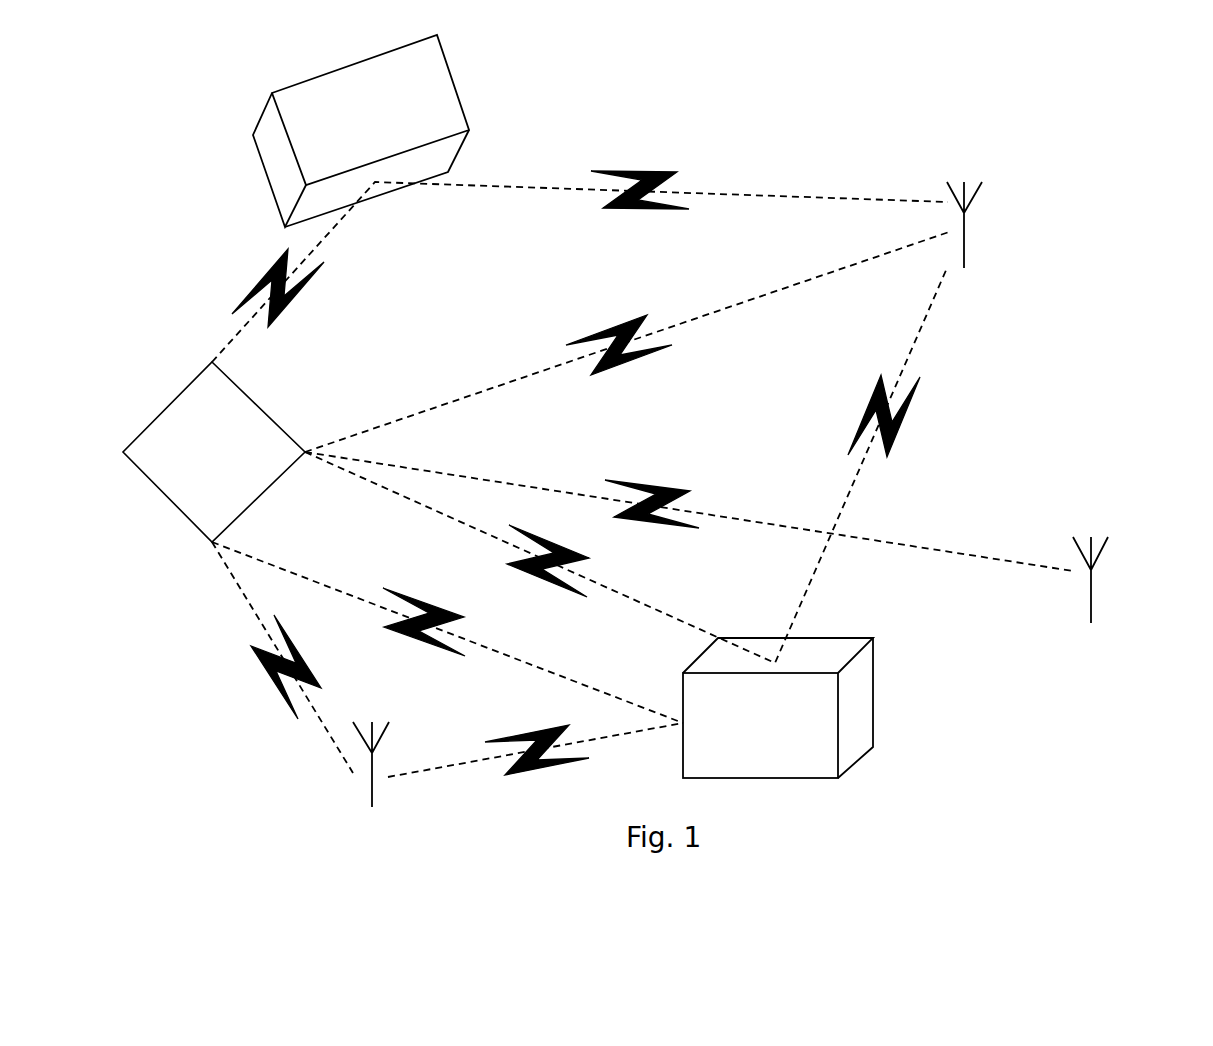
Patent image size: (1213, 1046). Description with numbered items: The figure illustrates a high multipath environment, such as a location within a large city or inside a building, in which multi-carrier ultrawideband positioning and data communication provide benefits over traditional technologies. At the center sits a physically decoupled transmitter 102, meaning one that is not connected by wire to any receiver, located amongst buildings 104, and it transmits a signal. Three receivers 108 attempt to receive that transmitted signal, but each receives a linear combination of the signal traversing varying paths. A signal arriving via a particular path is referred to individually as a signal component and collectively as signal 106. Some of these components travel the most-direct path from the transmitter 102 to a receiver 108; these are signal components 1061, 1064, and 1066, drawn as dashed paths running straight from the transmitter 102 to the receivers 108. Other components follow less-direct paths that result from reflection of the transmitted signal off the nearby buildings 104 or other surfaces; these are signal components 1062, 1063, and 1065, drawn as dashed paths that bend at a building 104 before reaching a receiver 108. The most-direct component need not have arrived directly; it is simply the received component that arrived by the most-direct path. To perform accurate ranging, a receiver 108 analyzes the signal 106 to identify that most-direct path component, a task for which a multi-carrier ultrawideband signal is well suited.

The transmitter 102 is at (230, 495).
The buildings 104 is at (387, 133).
The signal 106 is at (619, 492).
The signal component 1061 is at (673, 330).
The signal component 1062 is at (268, 325).
The signal component 1063 is at (587, 570).
The signal component 1064 is at (688, 507).
The signal component 1065 is at (455, 630).
The signal component 1066 is at (268, 638).
The receivers 108 is at (975, 255).